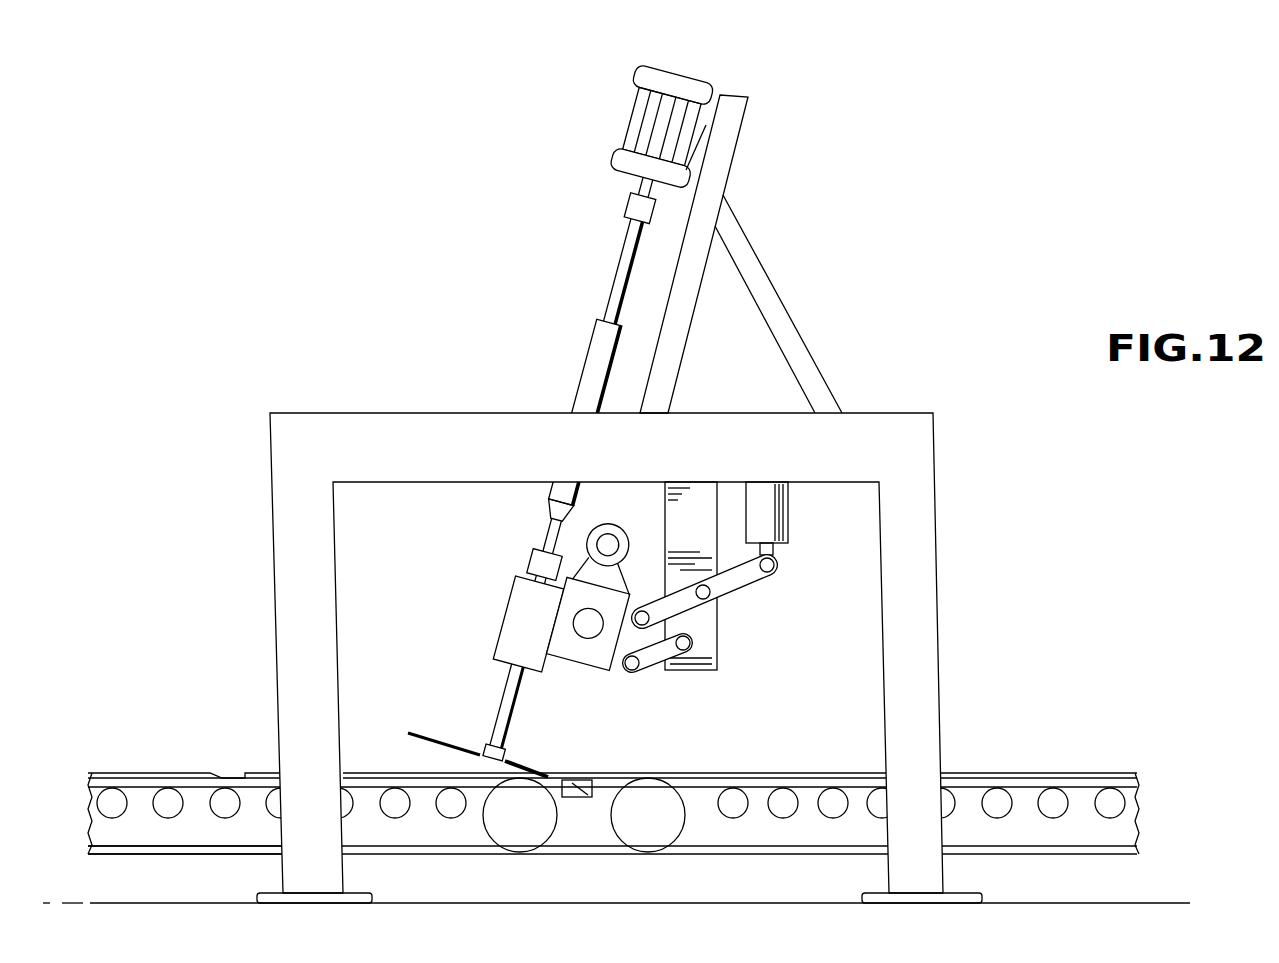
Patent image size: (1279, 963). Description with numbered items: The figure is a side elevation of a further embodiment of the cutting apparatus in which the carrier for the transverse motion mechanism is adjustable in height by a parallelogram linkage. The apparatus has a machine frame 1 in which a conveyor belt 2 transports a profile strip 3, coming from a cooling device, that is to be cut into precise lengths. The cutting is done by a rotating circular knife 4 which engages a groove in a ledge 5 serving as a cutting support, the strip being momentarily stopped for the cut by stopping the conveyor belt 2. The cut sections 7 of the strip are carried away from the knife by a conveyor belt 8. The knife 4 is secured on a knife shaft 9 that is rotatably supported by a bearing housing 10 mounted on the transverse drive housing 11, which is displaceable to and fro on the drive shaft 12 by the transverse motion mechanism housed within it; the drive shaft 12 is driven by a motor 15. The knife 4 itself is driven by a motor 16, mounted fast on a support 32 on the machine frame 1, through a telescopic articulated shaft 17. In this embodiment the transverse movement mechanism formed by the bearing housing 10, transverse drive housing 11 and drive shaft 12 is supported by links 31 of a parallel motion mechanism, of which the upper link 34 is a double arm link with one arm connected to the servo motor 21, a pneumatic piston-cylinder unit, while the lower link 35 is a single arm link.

The machine frame 1 is at (383, 423).
The conveyor belt 2 is at (778, 846).
The profile strip 3 is at (1035, 772).
The circular knife 4 is at (418, 735).
The ledge 5 is at (577, 798).
The cut sections 7 is at (143, 772).
The conveyor belt 8 is at (137, 848).
The knife shaft 9 is at (502, 713).
The bearing housing 10 is at (520, 620).
The transverse drive housing 11 is at (568, 652).
The drive shaft 12 is at (592, 627).
The motor 15 is at (607, 528).
The motor 16 is at (652, 72).
The articulated shaft 17 is at (590, 378).
The servo motor 21 is at (773, 512).
The links 31 is at (703, 623).
The support 32 is at (720, 153).
The upper link 34 is at (750, 575).
The lower link 35 is at (650, 663).